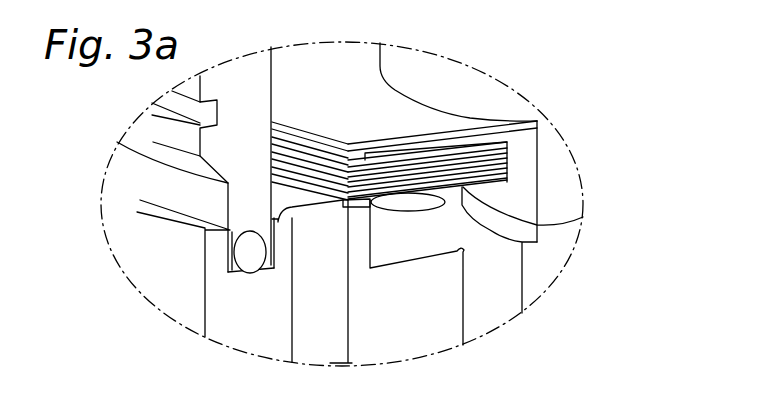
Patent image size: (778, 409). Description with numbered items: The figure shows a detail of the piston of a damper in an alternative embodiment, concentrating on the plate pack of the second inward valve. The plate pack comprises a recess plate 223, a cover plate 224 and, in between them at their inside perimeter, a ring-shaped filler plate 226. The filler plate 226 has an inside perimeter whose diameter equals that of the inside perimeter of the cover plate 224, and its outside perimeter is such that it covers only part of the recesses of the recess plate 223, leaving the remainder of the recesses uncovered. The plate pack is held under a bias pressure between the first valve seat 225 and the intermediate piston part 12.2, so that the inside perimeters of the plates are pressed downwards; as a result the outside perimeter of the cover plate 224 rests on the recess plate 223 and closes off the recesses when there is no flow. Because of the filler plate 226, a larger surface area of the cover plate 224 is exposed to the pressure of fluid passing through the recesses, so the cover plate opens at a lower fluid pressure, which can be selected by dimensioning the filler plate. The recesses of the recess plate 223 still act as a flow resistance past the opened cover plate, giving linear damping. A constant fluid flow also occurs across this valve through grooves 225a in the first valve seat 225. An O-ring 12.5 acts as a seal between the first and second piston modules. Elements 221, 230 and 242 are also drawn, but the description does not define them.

The intermediate piston part 12.2 is at (562, 161).
The O-ring 12.5 is at (250, 252).
The fastening element 221 is at (537, 165).
The recess plate 223 is at (537, 156).
The cover plate 224 is at (422, 120).
The first valve seat 225 is at (358, 222).
The grooves 225a is at (370, 200).
The filler plate 226 is at (537, 147).
The base block 230 is at (307, 333).
The post 242 is at (428, 247).